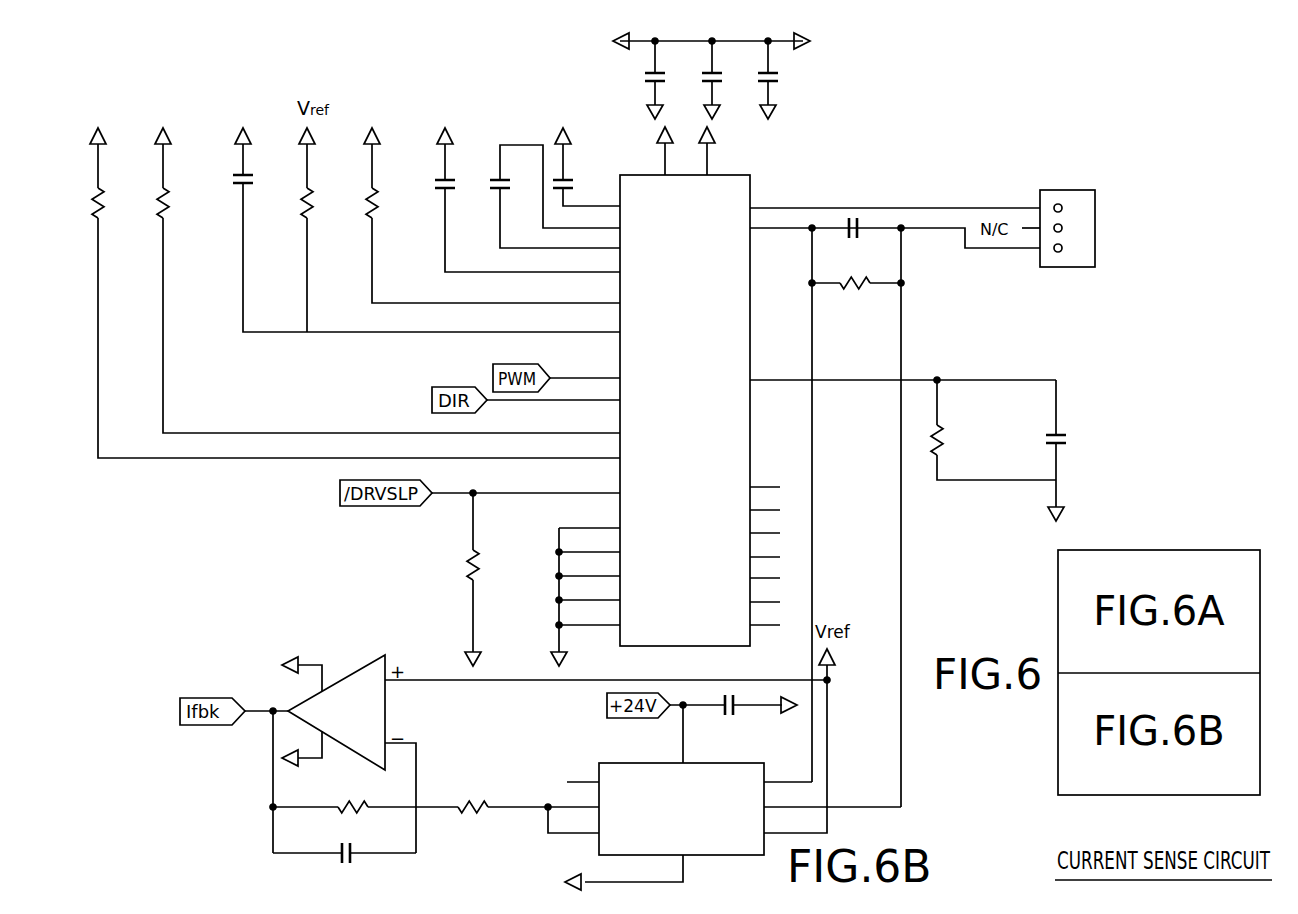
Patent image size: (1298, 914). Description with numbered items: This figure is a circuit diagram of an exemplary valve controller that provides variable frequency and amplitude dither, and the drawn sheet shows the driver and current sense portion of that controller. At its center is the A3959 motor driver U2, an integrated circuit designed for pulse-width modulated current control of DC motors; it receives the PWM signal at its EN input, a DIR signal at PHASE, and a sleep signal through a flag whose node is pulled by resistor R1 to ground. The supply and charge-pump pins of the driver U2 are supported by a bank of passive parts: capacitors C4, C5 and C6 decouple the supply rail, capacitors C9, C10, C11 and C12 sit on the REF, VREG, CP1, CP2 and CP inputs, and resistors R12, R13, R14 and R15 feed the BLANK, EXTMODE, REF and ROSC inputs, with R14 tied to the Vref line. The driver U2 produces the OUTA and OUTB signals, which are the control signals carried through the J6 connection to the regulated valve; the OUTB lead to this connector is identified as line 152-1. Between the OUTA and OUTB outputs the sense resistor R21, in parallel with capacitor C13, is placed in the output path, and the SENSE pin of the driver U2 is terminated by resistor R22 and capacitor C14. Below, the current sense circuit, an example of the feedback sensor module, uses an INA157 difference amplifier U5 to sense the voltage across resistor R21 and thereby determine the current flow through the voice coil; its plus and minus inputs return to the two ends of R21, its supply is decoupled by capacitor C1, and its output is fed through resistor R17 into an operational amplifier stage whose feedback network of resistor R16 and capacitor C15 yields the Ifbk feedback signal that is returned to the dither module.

The motor output wire to connector J6 152-1 is at (927, 228).
The A3959 motor driver IC U2 is at (699, 386).
The INA157 difference amplifier U5 is at (664, 797).
The J6 connection J6 is at (1067, 217).
The resistor R1 is at (486, 578).
The resistor R12 is at (355, 293).
The resistor R13 is at (387, 280).
The resistor R14 is at (322, 230).
The resistor R15 is at (492, 215).
The resistor R16 is at (343, 794).
The resistor R17 is at (507, 804).
The resistor R21 is at (856, 517).
The sense resistor R22 is at (993, 430).
The capacitor C1 is at (728, 718).
The capacitor C4 is at (668, 80).
The capacitor C5 is at (725, 80).
The capacitor C6 is at (781, 80).
The capacitor C9 is at (426, 230).
The capacitor C10 is at (527, 200).
The capacitor C11 is at (555, 196).
The capacitor C12 is at (586, 167).
The capacitor C13 is at (853, 242).
The capacitor C14 is at (1071, 450).
The capacitor C15 is at (344, 843).